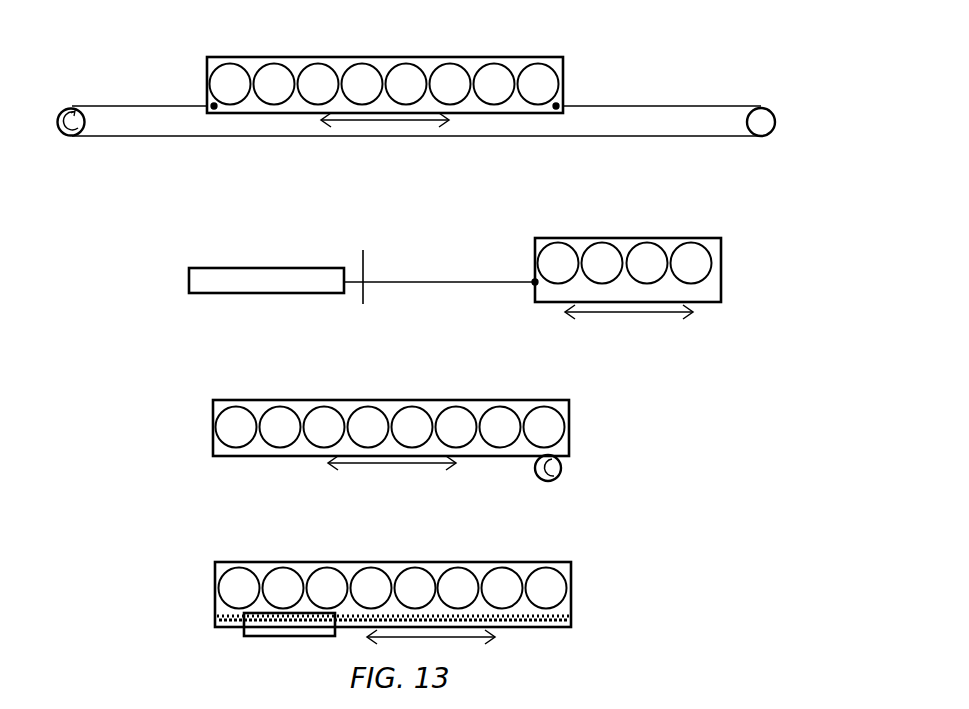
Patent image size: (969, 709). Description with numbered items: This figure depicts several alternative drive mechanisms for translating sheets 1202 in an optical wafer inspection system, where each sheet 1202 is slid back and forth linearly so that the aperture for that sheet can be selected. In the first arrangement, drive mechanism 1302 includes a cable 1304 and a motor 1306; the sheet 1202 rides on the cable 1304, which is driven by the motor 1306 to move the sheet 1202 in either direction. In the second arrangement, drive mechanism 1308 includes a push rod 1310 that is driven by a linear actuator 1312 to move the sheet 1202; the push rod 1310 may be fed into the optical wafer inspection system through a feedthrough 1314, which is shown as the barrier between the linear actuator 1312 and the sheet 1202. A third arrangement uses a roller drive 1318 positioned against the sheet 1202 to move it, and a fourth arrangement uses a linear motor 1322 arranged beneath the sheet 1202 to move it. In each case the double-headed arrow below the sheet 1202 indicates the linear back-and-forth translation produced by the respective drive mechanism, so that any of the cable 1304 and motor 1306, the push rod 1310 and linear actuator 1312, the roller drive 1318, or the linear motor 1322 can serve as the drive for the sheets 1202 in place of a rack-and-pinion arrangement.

The sheet 1202 is at (414, 57).
The drive mechanism 1302 is at (417, 334).
The cable 1304 is at (641, 106).
The motor 1306 is at (77, 135).
The drive mechanism 1308 is at (272, 533).
The push rod 1310 is at (420, 285).
The linear actuator 1312 is at (189, 282).
The feedthrough 1314 is at (364, 258).
The roller drive 1318 is at (535, 471).
The linear motor 1322 is at (280, 637).